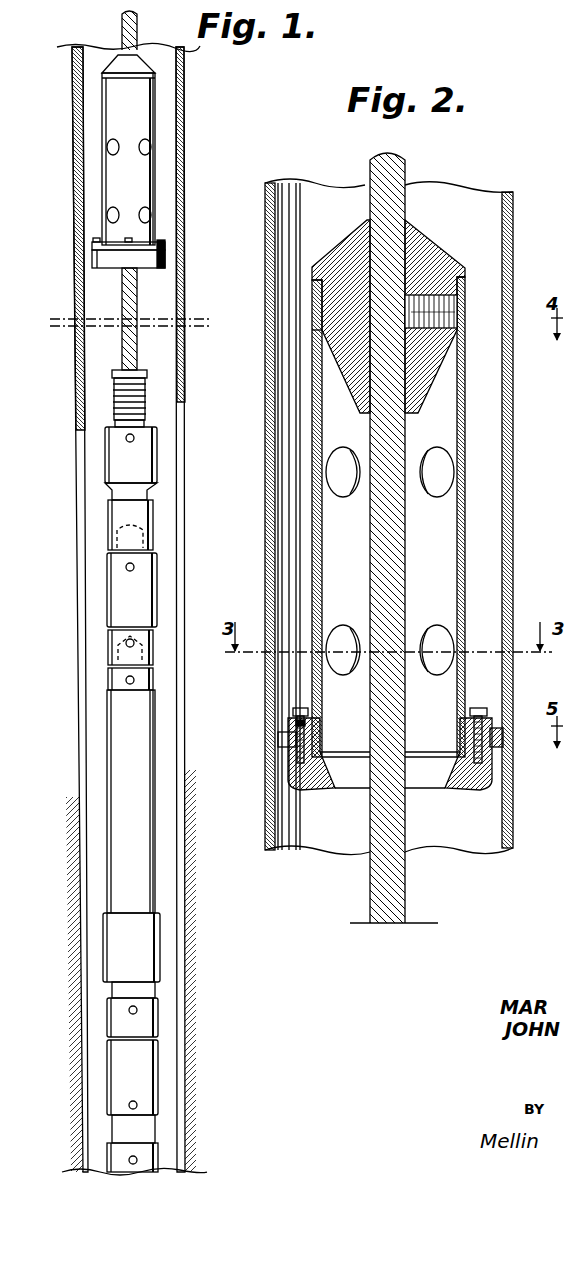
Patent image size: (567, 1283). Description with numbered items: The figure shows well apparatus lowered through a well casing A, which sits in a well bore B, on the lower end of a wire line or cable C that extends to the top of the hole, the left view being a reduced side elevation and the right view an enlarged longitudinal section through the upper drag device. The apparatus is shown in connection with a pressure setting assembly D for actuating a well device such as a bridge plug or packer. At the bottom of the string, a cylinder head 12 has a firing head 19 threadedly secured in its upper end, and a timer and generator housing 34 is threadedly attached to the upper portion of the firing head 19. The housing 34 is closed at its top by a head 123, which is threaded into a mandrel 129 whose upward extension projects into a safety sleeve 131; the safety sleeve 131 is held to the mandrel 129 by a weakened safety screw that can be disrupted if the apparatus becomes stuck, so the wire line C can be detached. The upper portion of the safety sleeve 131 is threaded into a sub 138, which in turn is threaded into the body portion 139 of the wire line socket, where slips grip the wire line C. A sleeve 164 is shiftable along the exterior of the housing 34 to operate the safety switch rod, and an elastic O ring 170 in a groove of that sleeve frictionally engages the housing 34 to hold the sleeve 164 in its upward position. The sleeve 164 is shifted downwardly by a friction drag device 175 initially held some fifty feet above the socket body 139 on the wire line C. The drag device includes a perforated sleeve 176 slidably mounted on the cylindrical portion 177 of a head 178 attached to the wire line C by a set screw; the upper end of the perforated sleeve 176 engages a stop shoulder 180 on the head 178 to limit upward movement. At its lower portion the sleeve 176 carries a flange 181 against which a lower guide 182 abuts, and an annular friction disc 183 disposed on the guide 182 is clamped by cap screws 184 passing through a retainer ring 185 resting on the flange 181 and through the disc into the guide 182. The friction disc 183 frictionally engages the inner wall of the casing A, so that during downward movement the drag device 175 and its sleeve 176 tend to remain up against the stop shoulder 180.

In FIG. 1, the well casing A is at (176, 160).
In FIG. 2, the well casing A is at (504, 232).
In FIG. 1, the well bore B is at (92, 148).
In FIG. 1, the wire line C is at (122, 28).
In FIG. 2, the wire line C is at (385, 172).
In FIG. 1, the pressure setting assembly D is at (160, 1118).
In FIG. 1, the cylinder head 12 is at (107, 1093).
In FIG. 1, the firing head 19 is at (107, 1013).
In FIG. 1, the timer and generator housing 34 is at (112, 788).
In FIG. 1, the head 123 is at (110, 681).
In FIG. 1, the mandrel 129 is at (110, 653).
In FIG. 2, the mandrel 129 is at (553, 910).
In FIG. 1, the safety sleeve 131 is at (110, 591).
In FIG. 2, the safety sleeve 131 is at (555, 810).
In FIG. 1, the sub 138 is at (110, 521).
In FIG. 1, the body portion of wire line socket 139 is at (112, 456).
In FIG. 1, the sleeve 164 is at (107, 955).
In FIG. 2, the O ring 170 is at (445, 316).
In FIG. 1, the friction drag device 175 is at (103, 100).
In FIG. 2, the friction drag device 175 is at (312, 495).
In FIG. 1, the perforated sleeve 176 is at (107, 200).
In FIG. 2, the perforated sleeve 176 is at (466, 492).
In FIG. 2, the cylindrical portion 177 is at (325, 328).
In FIG. 1, the head 178 is at (184, 75).
In FIG. 2, the head 178 is at (343, 247).
In FIG. 2, the stop shoulder 180 is at (466, 270).
In FIG. 2, the flange 181 is at (462, 740).
In FIG. 1, the lower guide 182 is at (92, 268).
In FIG. 2, the lower guide 182 is at (290, 785).
In FIG. 1, the friction disc 183 is at (95, 248).
In FIG. 2, the friction disc 183 is at (280, 742).
In FIG. 1, the cap screws 184 is at (163, 242).
In FIG. 2, the cap screws 184 is at (298, 708).
In FIG. 2, the retainer ring 185 is at (290, 726).